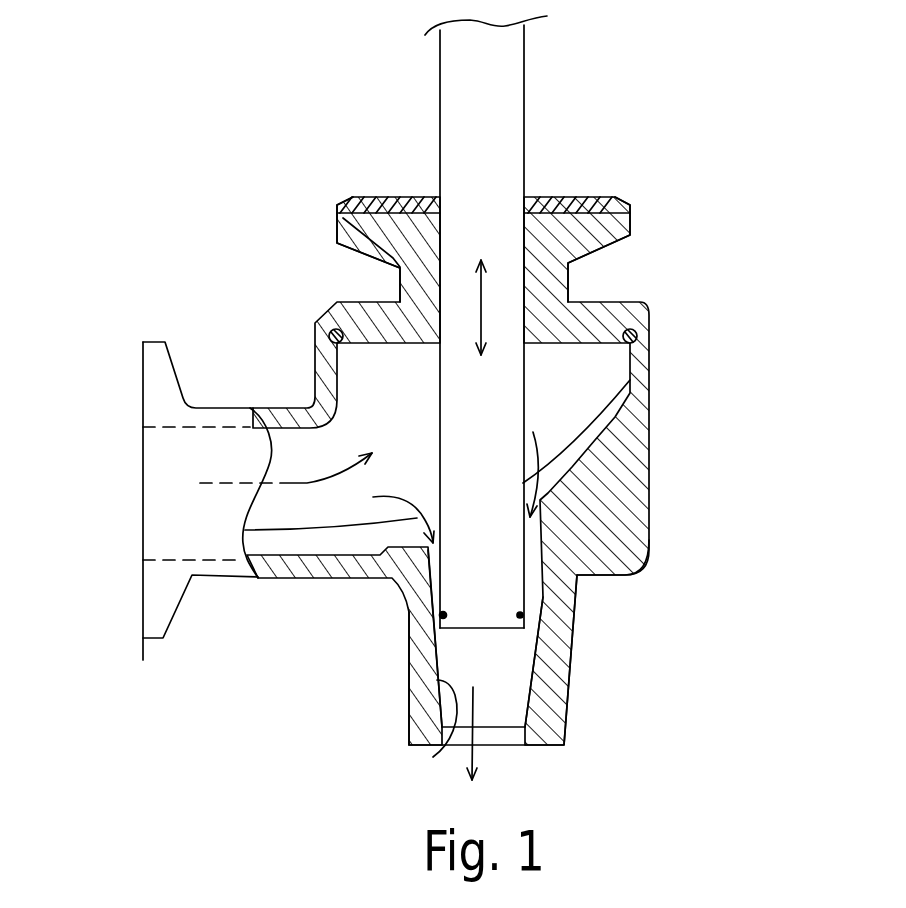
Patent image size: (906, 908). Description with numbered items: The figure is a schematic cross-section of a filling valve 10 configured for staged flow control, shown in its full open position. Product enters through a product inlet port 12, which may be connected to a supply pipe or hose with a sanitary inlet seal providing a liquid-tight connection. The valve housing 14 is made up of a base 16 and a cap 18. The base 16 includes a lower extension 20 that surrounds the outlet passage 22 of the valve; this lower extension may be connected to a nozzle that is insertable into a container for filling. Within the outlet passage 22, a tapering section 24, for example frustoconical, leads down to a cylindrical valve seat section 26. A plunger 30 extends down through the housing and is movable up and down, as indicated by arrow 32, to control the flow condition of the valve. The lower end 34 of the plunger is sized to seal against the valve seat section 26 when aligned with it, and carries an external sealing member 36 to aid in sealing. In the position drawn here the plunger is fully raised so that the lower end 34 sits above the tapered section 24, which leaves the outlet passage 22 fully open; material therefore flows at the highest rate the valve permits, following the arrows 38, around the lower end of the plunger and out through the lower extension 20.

The filling valve 10 is at (688, 217).
The product inlet port 12 is at (140, 477).
The valve housing 14 is at (655, 432).
The base 16 is at (610, 565).
The cap 18 is at (583, 312).
The lower extension 20 is at (563, 705).
The outlet passage 22 is at (493, 683).
The tapering section 24 is at (433, 757).
The cylindrical valve seat section 26 is at (523, 735).
The plunger 30 is at (508, 163).
The arrow 32 is at (483, 302).
The lower end of the plunger 34 is at (507, 600).
The external sealing member 36 is at (441, 611).
The arrows 38 is at (300, 478).